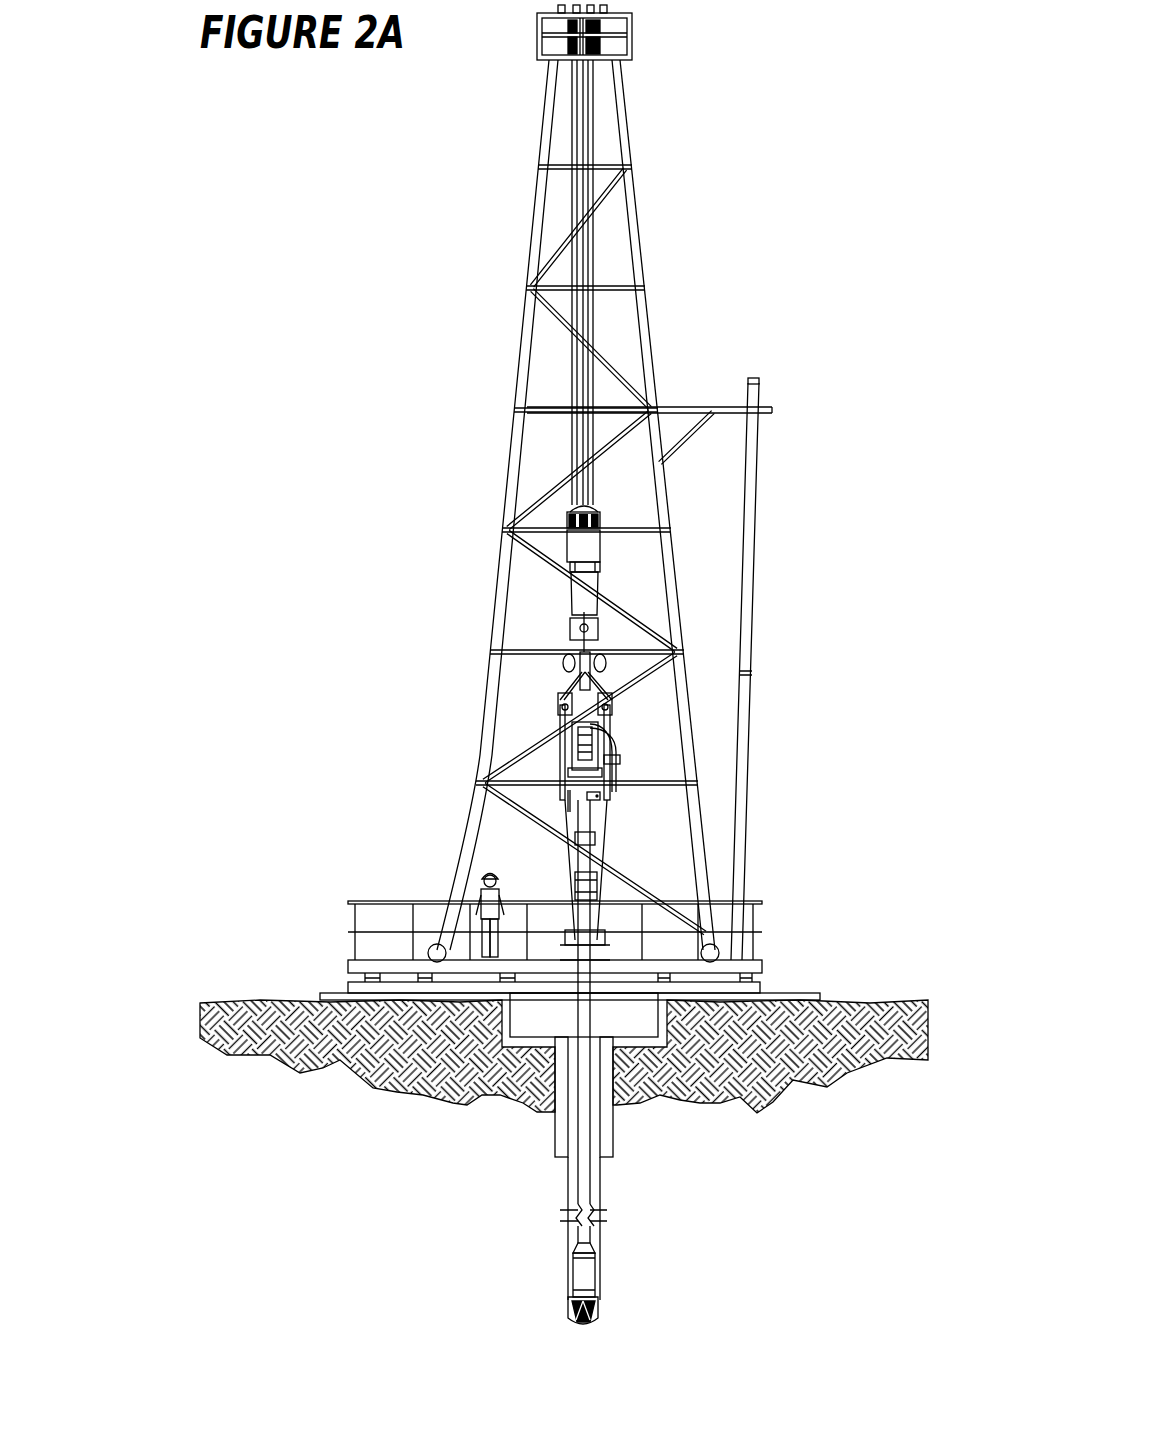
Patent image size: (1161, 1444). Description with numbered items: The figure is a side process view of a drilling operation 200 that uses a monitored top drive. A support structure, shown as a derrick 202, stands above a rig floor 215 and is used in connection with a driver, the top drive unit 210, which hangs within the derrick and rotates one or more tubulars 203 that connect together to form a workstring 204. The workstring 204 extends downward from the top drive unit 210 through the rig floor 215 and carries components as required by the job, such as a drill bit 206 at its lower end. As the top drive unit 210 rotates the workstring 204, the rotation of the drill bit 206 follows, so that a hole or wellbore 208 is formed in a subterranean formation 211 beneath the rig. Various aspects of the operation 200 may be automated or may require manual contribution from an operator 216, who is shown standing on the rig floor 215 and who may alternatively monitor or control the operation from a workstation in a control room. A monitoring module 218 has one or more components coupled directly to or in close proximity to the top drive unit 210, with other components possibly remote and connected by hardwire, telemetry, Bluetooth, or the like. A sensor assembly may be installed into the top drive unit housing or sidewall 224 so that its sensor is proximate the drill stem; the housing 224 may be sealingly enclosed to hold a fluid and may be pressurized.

The drilling operation 200 is at (466, 1329).
The derrick 202 is at (488, 606).
The tubulars 203 is at (598, 1003).
The workstring 204 is at (596, 1232).
The drill bit 206 is at (598, 1307).
The wellbore 208 is at (575, 1180).
The top drive unit 210 is at (625, 747).
The subterranean formation 211 is at (722, 1280).
The rig floor 215 is at (378, 960).
The operator 216 is at (478, 890).
The monitoring module 218 is at (598, 798).
The top drive unit housing 224 is at (573, 801).